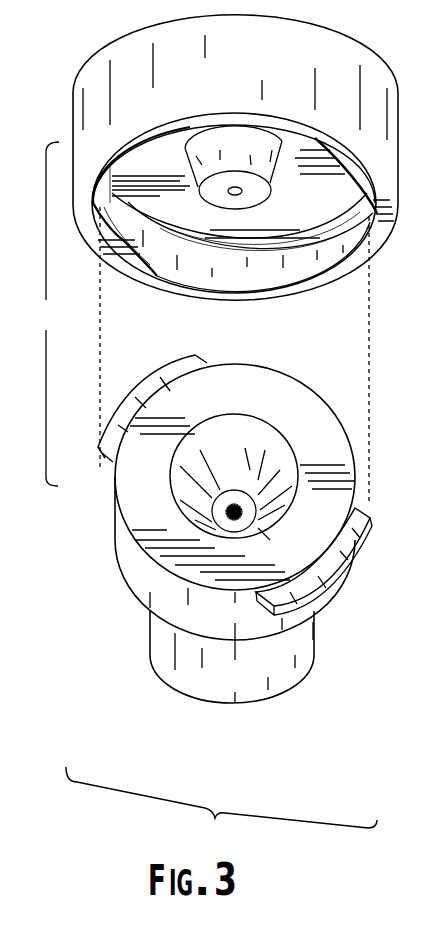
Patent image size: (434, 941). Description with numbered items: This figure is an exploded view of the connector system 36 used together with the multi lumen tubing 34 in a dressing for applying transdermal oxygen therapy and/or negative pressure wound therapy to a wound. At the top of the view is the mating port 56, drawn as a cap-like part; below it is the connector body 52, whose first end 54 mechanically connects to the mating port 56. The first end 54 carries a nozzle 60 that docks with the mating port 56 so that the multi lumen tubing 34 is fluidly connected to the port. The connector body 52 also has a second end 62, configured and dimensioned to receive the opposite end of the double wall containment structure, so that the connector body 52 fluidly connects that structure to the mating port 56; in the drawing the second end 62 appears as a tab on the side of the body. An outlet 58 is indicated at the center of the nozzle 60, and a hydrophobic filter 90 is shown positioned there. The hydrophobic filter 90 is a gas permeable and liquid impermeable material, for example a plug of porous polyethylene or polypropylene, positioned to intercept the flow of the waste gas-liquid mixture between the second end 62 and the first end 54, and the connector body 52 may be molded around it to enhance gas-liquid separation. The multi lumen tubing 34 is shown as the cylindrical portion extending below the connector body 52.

The mating port 56 is at (248, 60).
The connector system 36 is at (202, 323).
The first end 54 is at (233, 403).
The nozzle 60 is at (228, 458).
The outlet 58 is at (235, 486).
The hydrophobic filter 90 is at (245, 507).
The connector body 52 is at (132, 577).
The second end 62 is at (330, 594).
The multi lumen tubing 34 is at (282, 683).